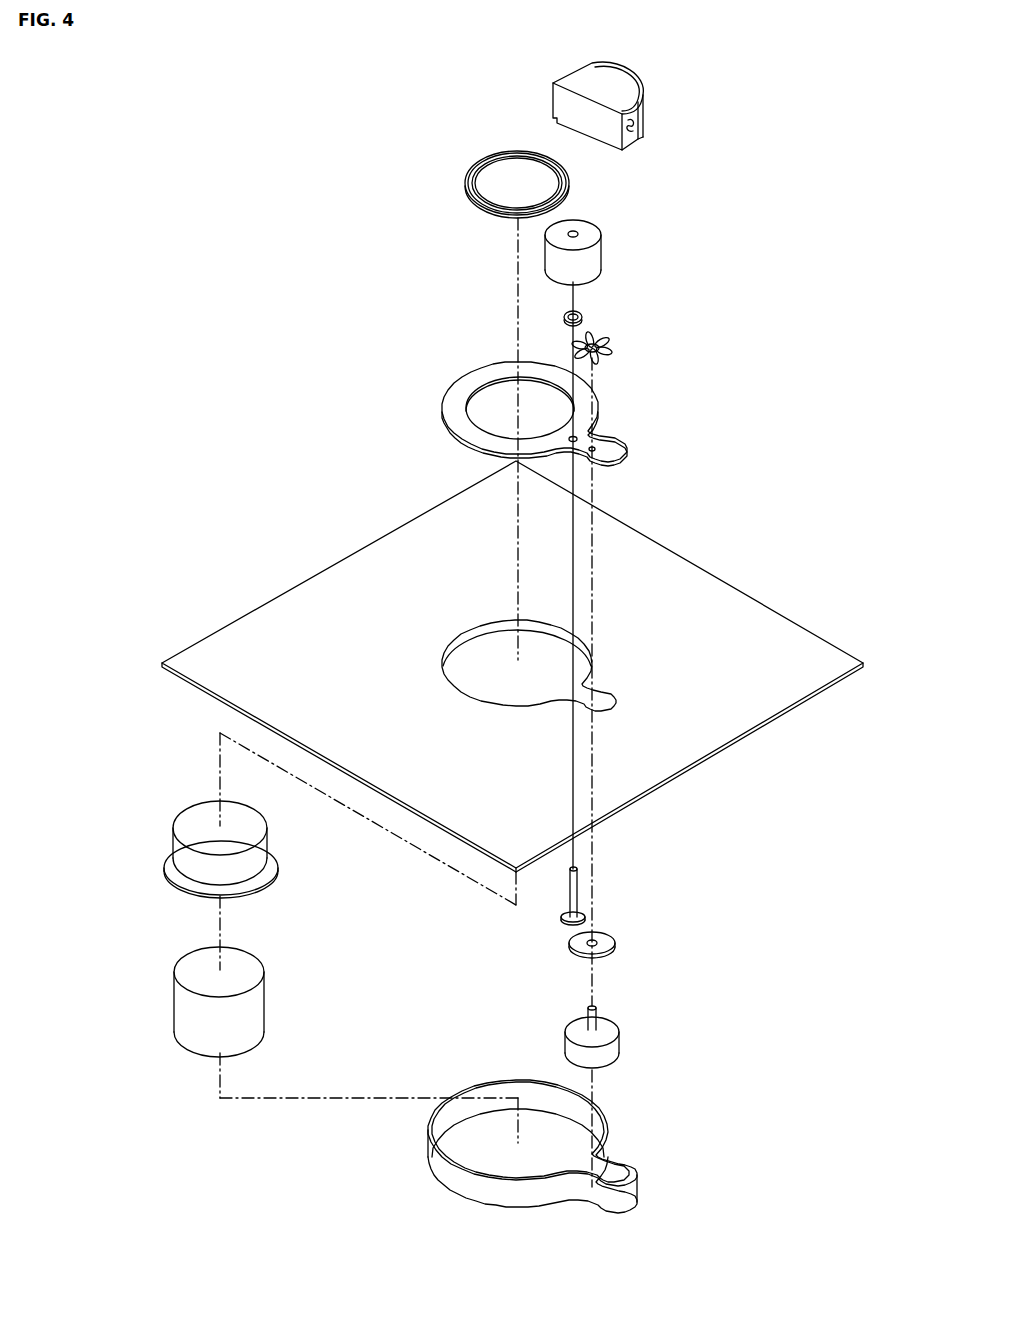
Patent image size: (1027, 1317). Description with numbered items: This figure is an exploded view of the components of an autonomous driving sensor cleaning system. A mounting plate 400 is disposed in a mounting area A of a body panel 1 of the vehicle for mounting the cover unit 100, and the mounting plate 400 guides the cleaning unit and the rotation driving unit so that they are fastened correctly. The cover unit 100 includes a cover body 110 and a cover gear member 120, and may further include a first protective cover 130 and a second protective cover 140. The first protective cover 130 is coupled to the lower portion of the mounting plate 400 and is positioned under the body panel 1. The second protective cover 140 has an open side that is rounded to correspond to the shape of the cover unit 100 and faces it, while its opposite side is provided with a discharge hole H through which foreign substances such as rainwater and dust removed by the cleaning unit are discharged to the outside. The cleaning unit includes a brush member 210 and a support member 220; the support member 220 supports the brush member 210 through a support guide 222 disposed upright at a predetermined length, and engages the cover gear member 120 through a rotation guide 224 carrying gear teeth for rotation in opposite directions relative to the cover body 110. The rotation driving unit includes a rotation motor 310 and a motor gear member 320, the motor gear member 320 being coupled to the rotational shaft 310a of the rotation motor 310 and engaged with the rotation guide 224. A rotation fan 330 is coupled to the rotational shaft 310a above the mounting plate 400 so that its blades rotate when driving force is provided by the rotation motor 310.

The body panel 1 is at (730, 632).
The mounting area A is at (560, 635).
The discharge hole H is at (632, 126).
The cover unit 100 is at (167, 849).
The cover body 110 is at (182, 822).
The cover gear member 120 is at (171, 860).
The first protective cover 130 is at (608, 1130).
The second protective cover 140 is at (553, 96).
The brush member 210 is at (599, 251).
The support member 220 is at (642, 885).
The support guide 222 is at (578, 876).
The rotation guide 224 is at (622, 912).
The rotation motor 310 is at (635, 1027).
The rotational shaft 310a is at (597, 1012).
The motor gear member 320 is at (572, 945).
The rotation fan 330 is at (612, 349).
The mounting plate 400 is at (450, 406).